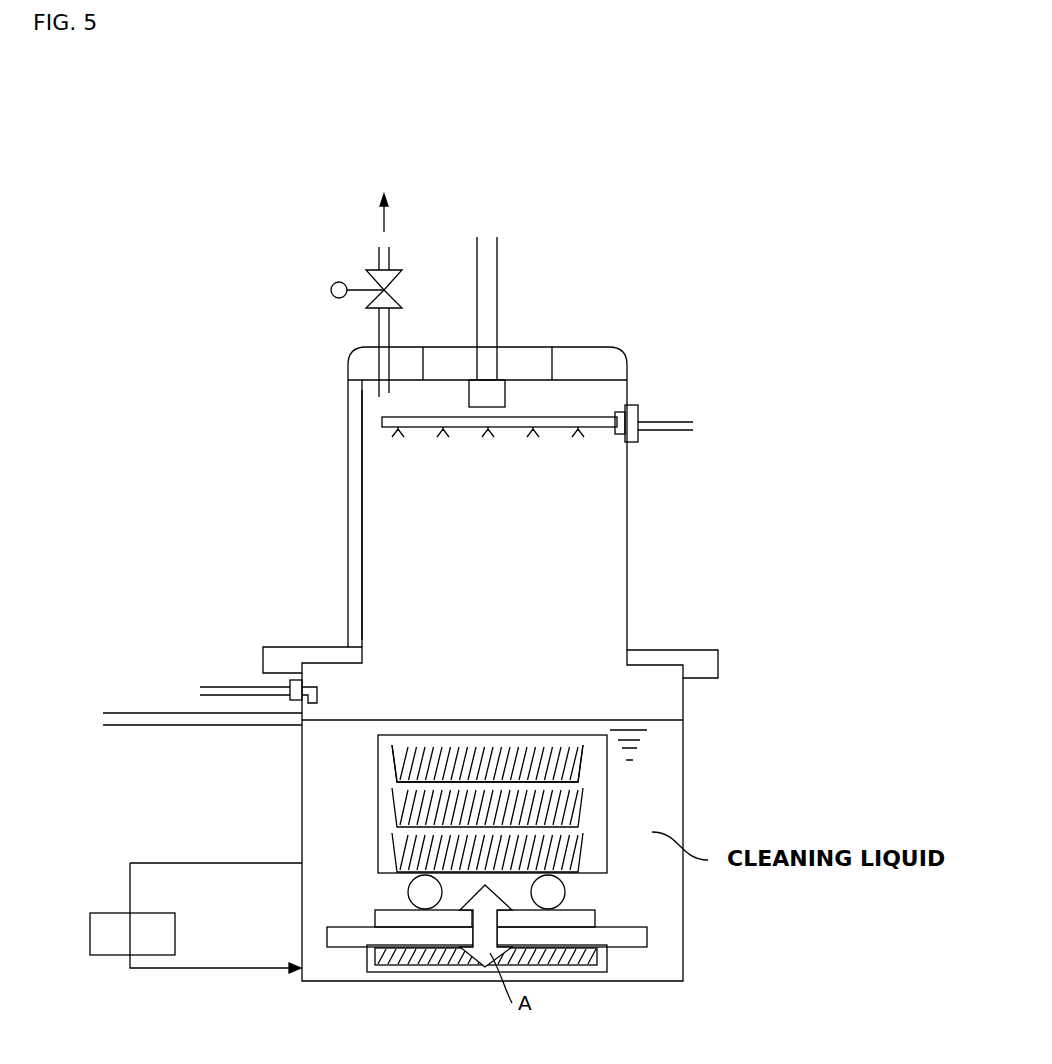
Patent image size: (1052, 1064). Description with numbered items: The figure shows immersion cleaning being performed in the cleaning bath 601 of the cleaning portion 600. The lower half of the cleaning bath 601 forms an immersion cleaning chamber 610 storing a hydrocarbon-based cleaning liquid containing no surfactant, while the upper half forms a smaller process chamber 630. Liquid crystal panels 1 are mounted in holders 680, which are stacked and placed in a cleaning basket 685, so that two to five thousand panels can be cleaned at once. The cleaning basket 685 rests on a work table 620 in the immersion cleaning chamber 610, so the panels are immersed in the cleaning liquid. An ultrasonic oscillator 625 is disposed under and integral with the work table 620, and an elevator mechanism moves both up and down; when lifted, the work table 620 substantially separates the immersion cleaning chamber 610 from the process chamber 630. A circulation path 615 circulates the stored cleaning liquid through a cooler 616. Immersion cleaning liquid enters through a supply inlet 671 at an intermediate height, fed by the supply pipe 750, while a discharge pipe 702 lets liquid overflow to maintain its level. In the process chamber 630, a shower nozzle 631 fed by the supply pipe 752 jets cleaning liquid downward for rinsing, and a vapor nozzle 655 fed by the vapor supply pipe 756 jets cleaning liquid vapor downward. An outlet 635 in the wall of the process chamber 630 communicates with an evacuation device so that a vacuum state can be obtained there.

The liquid crystal panel 1 is at (497, 768).
The cleaning portion 600 is at (238, 475).
The cleaning bath 601 is at (624, 615).
The immersion cleaning chamber 610 is at (652, 868).
The circulation path 615 is at (225, 968).
The cooler 616 is at (107, 937).
The work table 620 is at (352, 925).
The ultrasonic oscillator 625 is at (417, 957).
The process chamber 630 is at (597, 517).
The shower nozzle 631 is at (382, 422).
The outlet 635 is at (378, 392).
The vapor nozzle 655 is at (492, 390).
The supply inlet 671 is at (310, 687).
The holder 680 is at (392, 815).
The cleaning basket 685 is at (378, 787).
The discharge pipe 702 is at (162, 713).
The supply pipe for immersion cleaning liquid 750 is at (233, 687).
The supply pipe for shower cleaning liquid 752 is at (677, 419).
The vapor supply pipe 756 is at (493, 270).